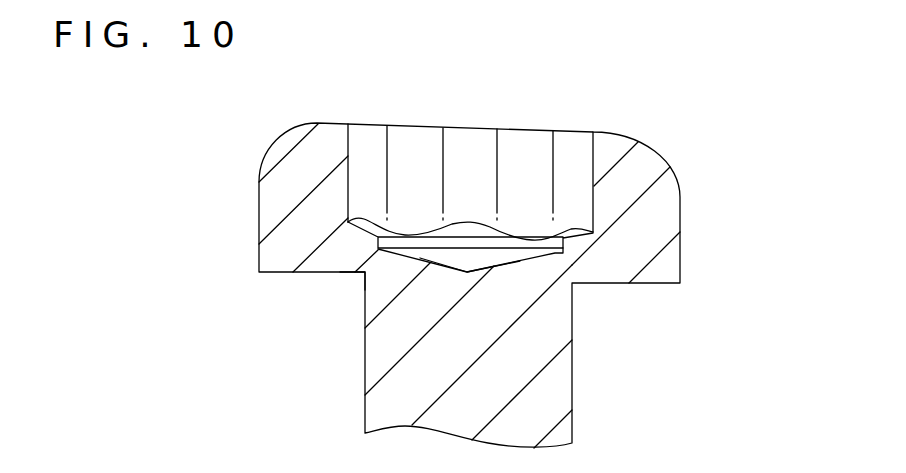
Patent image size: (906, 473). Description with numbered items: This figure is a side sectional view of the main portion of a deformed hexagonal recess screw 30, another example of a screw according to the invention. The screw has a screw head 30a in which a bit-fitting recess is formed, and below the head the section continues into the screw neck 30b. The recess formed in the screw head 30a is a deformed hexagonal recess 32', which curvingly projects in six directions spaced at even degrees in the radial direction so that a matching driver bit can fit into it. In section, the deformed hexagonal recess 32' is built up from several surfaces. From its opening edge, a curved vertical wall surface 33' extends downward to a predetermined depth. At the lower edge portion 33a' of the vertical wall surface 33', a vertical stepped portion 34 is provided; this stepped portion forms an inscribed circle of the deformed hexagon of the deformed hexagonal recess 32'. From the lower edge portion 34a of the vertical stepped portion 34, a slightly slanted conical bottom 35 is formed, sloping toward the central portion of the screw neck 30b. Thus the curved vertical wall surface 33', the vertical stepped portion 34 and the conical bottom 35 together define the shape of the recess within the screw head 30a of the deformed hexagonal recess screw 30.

The deformed hexagonal recess screw 30 is at (687, 154).
The screw head 30a is at (665, 212).
The screw neck 30b is at (470, 315).
The deformed hexagonal recess 32' is at (470, 125).
The curved vertical wall surface 33' is at (470, 139).
The lower edge portion 33a' is at (375, 247).
The vertical stepped portion 34 is at (563, 248).
The lower edge portion 34a is at (355, 263).
The conical bottom 35 is at (502, 260).